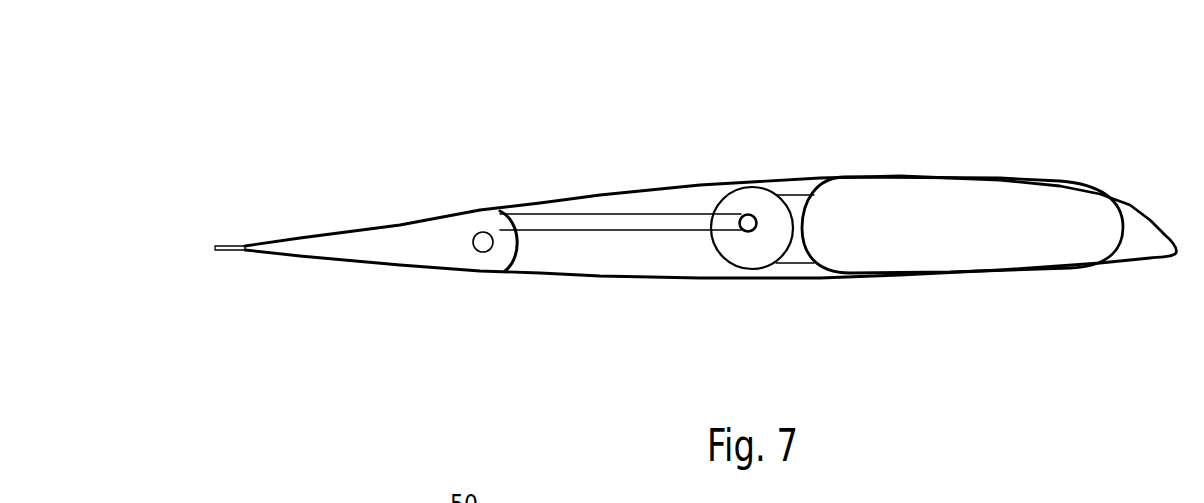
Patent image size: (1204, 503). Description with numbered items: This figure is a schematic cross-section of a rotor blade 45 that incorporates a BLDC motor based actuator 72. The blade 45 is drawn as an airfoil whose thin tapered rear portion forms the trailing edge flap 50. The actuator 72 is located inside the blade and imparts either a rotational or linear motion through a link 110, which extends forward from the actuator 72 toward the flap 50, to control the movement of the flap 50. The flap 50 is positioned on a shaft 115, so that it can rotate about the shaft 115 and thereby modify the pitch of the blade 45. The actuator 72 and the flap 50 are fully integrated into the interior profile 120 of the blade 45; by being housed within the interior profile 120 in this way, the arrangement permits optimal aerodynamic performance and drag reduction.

The blade 45 is at (540, 98).
The trailing edge flap 50 is at (407, 237).
The BLDC motor based actuator 72 is at (757, 250).
The link 110 is at (630, 223).
The shaft 115 is at (483, 244).
The interior profile 120 is at (887, 177).